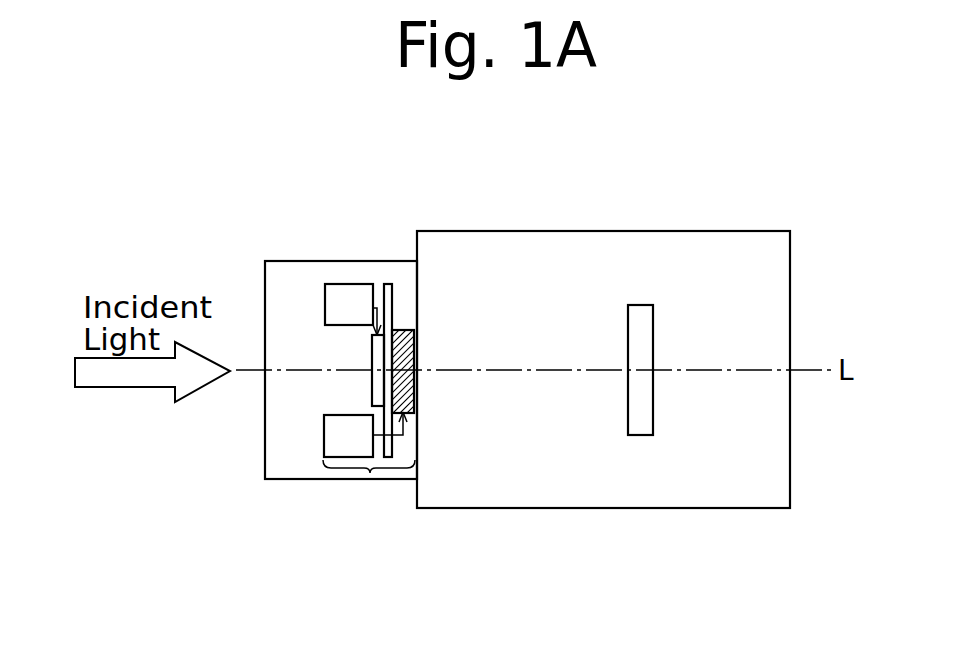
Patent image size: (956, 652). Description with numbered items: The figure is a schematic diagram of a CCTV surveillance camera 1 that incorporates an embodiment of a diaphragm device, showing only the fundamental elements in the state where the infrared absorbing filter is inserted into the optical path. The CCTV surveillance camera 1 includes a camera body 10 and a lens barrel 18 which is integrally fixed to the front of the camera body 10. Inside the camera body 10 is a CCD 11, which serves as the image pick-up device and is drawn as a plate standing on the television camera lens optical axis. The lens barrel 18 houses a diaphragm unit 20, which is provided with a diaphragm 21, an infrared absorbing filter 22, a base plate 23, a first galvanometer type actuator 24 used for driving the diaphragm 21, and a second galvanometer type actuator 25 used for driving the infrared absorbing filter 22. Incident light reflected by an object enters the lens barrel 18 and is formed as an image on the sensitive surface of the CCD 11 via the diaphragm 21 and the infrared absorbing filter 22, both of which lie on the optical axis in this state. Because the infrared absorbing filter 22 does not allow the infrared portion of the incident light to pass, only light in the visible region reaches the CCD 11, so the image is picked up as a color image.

The CCTV surveillance camera 1 is at (746, 142).
The camera body 10 is at (605, 229).
The CCD 11 is at (640, 404).
The lens barrel 18 is at (342, 258).
The diaphragm unit 20 is at (370, 473).
The diaphragm 21 is at (382, 386).
The infrared absorbing filter 22 is at (400, 396).
The base plate 23 is at (394, 291).
The first galvanometer type actuator 24 is at (350, 302).
The second galvanometer type actuator 25 is at (350, 434).